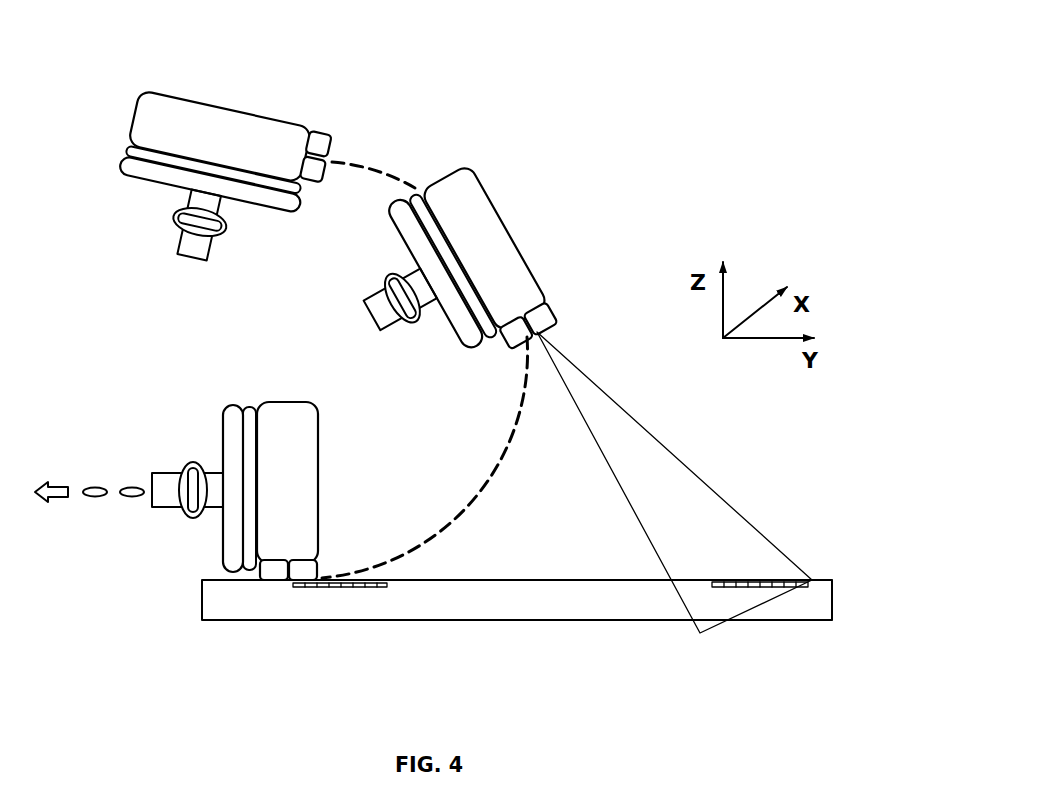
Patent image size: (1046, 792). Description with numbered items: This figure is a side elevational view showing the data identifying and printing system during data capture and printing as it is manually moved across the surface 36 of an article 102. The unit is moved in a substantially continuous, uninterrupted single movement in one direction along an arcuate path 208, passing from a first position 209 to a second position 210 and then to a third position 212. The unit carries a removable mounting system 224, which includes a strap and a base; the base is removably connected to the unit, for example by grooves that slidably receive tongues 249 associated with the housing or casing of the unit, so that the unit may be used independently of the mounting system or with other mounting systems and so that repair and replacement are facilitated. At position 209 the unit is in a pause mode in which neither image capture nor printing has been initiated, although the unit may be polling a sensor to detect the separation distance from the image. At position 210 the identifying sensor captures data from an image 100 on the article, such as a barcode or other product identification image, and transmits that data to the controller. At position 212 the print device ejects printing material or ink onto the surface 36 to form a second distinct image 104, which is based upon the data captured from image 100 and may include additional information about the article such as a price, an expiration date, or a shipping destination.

The surface 36 is at (548, 580).
The image 100 is at (775, 589).
The article 102 is at (833, 580).
The second distinct image 104 is at (350, 588).
The arcuate path 208 is at (385, 171).
The position 209 is at (219, 175).
The position 210 is at (485, 261).
The position 212 is at (257, 494).
The mounting system 224 is at (124, 174).
The tongues 249 is at (246, 408).